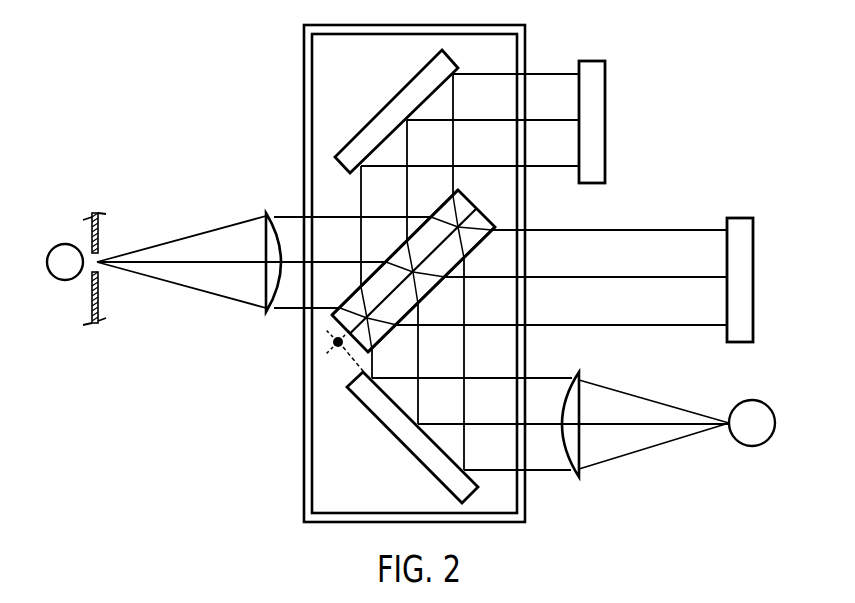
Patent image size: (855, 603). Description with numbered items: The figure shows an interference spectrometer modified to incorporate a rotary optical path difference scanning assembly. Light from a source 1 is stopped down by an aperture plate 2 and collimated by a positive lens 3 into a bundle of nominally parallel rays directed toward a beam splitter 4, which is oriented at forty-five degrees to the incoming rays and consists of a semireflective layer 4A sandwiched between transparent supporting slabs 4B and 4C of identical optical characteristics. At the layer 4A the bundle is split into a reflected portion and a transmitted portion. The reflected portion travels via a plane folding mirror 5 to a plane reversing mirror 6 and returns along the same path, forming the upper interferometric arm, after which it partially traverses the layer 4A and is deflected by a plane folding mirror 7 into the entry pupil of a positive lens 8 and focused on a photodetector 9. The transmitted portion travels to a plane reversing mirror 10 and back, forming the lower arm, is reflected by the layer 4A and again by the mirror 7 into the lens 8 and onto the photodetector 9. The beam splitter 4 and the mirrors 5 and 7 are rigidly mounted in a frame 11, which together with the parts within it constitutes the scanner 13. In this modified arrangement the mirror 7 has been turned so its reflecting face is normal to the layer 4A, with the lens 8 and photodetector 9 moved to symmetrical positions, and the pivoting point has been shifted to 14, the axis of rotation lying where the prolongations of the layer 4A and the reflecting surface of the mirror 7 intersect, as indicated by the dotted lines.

The source 1 is at (67, 281).
The aperture plate 2 is at (101, 230).
The positive lens 3 is at (266, 211).
The beam splitter 4 is at (389, 266).
The semireflective layer 4A is at (470, 220).
The transparent supporting slab 4B is at (437, 212).
The transparent supporting slab 4C is at (472, 242).
The plane folding mirror 5 is at (412, 92).
The plane reversing mirror 6 is at (597, 113).
The plane folding mirror 7 is at (408, 452).
The positive lens 8 is at (577, 372).
The photodetector 9 is at (745, 447).
The plane reversing mirror 10 is at (743, 275).
The frame 11 is at (520, 505).
The scanner 13 is at (297, 477).
The pivoting point 14 is at (337, 349).